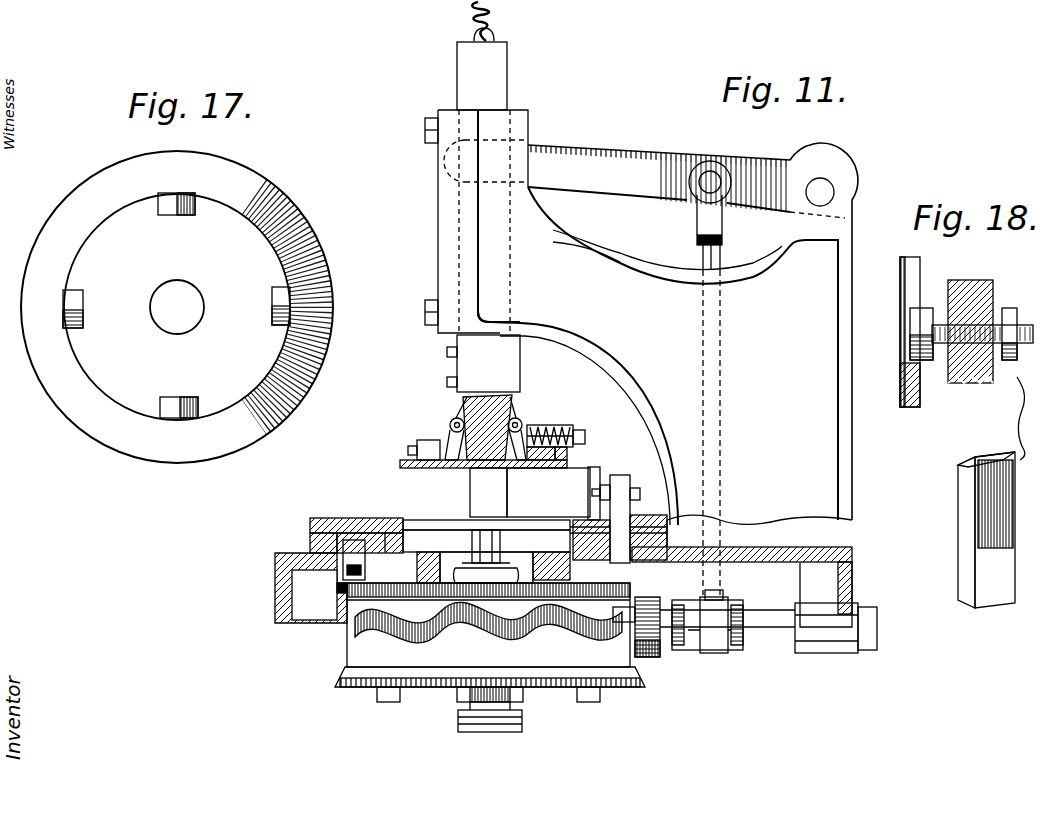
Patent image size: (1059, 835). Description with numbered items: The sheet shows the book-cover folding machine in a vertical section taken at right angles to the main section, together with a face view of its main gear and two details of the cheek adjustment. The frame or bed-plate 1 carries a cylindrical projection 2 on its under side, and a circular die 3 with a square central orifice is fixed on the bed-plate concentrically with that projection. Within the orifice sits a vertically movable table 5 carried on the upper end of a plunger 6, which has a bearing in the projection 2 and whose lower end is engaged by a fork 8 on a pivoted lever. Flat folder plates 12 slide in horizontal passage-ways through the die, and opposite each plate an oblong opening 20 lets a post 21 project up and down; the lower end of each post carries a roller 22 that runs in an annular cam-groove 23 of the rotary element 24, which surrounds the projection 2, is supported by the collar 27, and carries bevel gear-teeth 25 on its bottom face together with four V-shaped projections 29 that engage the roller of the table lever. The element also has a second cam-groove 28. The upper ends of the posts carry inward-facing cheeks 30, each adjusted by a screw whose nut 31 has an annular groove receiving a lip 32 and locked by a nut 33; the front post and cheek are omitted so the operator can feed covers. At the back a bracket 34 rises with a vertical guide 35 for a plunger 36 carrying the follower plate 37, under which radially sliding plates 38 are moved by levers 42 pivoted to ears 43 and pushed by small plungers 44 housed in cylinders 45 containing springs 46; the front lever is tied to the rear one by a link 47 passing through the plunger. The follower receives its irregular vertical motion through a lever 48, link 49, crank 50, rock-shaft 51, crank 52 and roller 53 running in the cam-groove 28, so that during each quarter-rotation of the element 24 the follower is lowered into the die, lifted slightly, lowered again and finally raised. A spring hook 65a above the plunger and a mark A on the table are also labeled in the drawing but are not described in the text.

In FIG. 11, the frame or bed-plate 1 is at (287, 588).
In FIG. 11, the cylindrical projection 2 is at (445, 543).
In FIG. 11, the circular die 3 is at (310, 520).
In FIG. 11, the vertically-movable table 5 is at (525, 528).
In FIG. 11, the plunger 6 is at (500, 541).
In FIG. 11, the fork 8 is at (462, 735).
In FIG. 11, the flat plate or folder 12 is at (330, 520).
In FIG. 11, the oblong opening 20 is at (636, 515).
In FIG. 11, the post 21 is at (622, 478).
In FIG. 11, the roller 22 is at (668, 523).
In FIG. 11, the annular cam-groove 23 is at (337, 588).
In FIG. 11, the wheel or rotary element 24 is at (347, 655).
In FIG. 17, the bevel gear-teeth 25 is at (330, 310).
In FIG. 11, the bevel gear-teeth 25 is at (612, 690).
In FIG. 11, the collar 27 is at (523, 698).
In FIG. 11, the annular cam-groove 28 is at (495, 625).
In FIG. 17, the V-shaped projections 29 is at (270, 290).
In FIG. 11, the V-shaped projections 29 is at (392, 702).
In FIG. 11, the cheek 30 is at (608, 478).
In FIG. 18, the cheek 30 is at (900, 292).
In FIG. 18, the nut 31 is at (922, 308).
In FIG. 18, the lip 32 is at (1003, 483).
In FIG. 18, the nut 33 is at (1012, 308).
In FIG. 11, the bracket 34 is at (665, 429).
In FIG. 11, the vertical guide 35 is at (438, 190).
In FIG. 11, the plunger 36 is at (482, 76).
In FIG. 11, the horizontal rectangular plate 37 is at (417, 450).
In FIG. 11, the plate 38 is at (410, 468).
In FIG. 11, the lever 42 is at (450, 470).
In FIG. 11, the ear 43 is at (513, 418).
In FIG. 11, the small horizontal plunger 44 is at (585, 437).
In FIG. 11, the small cylinder 45 is at (550, 429).
In FIG. 11, the spring 46 is at (550, 430).
In FIG. 11, the link 47 is at (455, 408).
In FIG. 11, the lever 48 is at (615, 165).
In FIG. 11, the link 49 is at (722, 380).
In FIG. 11, the crank 50 is at (732, 640).
In FIG. 11, the rock-shaft 51 is at (755, 620).
In FIG. 11, the crank 52 is at (648, 657).
In FIG. 11, the roller 53 is at (641, 605).
In FIG. 11, the spring hook 65a is at (503, 20).
In FIG. 11, the axis A is at (388, 523).